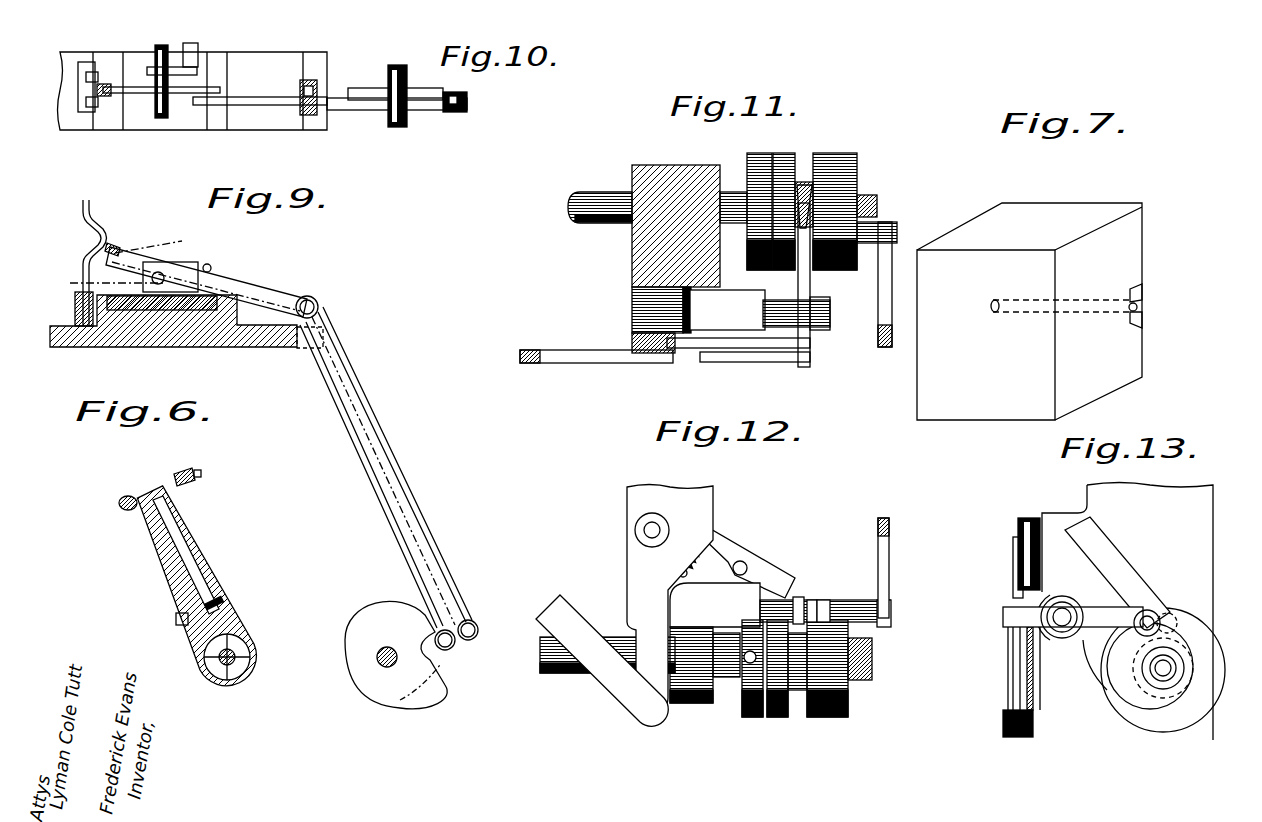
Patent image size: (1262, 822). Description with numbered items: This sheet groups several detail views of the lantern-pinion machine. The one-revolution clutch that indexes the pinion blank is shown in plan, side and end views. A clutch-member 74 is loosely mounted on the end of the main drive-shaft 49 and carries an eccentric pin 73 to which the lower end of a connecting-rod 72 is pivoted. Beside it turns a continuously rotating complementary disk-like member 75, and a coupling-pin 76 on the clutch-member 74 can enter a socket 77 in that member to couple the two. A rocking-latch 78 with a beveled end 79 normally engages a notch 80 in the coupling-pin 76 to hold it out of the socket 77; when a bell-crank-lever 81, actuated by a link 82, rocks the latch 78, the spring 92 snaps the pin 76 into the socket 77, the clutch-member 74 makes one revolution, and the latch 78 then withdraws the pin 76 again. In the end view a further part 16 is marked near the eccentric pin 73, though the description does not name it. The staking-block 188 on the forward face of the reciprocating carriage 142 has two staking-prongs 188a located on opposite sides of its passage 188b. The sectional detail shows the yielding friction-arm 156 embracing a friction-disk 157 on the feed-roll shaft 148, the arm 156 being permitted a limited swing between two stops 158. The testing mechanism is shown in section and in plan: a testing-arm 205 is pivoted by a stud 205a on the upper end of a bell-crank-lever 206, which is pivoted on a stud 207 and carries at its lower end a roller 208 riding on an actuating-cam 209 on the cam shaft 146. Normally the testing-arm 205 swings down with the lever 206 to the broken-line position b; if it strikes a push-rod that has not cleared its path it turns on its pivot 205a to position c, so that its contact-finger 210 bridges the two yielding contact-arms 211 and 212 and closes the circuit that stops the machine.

In FIG. 10, the reciprocating carriage 142 is at (198, 124).
In FIG. 9, the reciprocating carriage 142 is at (150, 308).
In FIG. 10, the cam shaft 146 is at (405, 118).
In FIG. 9, the cam shaft 146 is at (385, 668).
In FIG. 6, the feed-roll shaft 148 is at (233, 680).
In FIG. 6, the yielding friction-arm 156 is at (212, 560).
In FIG. 6, the friction-disk 157 is at (247, 630).
In FIG. 6, the stops 158 is at (183, 473).
In FIG. 10, the testing-arm 205 is at (140, 93).
In FIG. 9, the testing-arm 205 is at (128, 258).
In FIG. 10, the stud 205a is at (208, 105).
In FIG. 9, the stud 205a is at (211, 267).
In FIG. 10, the bell-crank-lever 206 is at (345, 112).
In FIG. 9, the bell-crank-lever 206 is at (342, 383).
In FIG. 9, the stud 207 is at (320, 300).
In FIG. 10, the roller 208 is at (468, 99).
In FIG. 9, the roller 208 is at (457, 653).
In FIG. 10, the actuating-cam 209 is at (362, 94).
In FIG. 9, the actuating-cam 209 is at (450, 697).
In FIG. 10, the contact-finger 210 is at (103, 110).
In FIG. 9, the contact-finger 210 is at (113, 244).
In FIG. 10, the yielding contact-arm 211 is at (88, 84).
In FIG. 9, the yielding contact-arm 211 is at (90, 214).
In FIG. 10, the yielding contact-arm 212 is at (88, 104).
In FIG. 9, the broken-line position b is at (106, 283).
In FIG. 9, the broken-line position c is at (155, 242).
In FIG. 11, the main drive-shaft 49 is at (582, 228).
In FIG. 12, the main drive-shaft 49 is at (557, 668).
In FIG. 13, the main drive-shaft 49 is at (1165, 672).
In FIG. 11, the connecting-rod 72 is at (880, 320).
In FIG. 12, the connecting-rod 72 is at (889, 562).
In FIG. 13, the connecting-rod 72 is at (1110, 568).
In FIG. 11, the eccentric pin 73 is at (897, 230).
In FIG. 12, the eccentric pin 73 is at (892, 613).
In FIG. 13, the eccentric pin 73 is at (1160, 612).
In FIG. 11, the clutch-member 74 is at (853, 182).
In FIG. 12, the clutch-member 74 is at (848, 708).
In FIG. 13, the clutch-member 74 is at (1178, 720).
In FIG. 11, the complementary disk-like member 75 is at (765, 155).
In FIG. 12, the complementary disk-like member 75 is at (750, 718).
In FIG. 11, the coupling-pin 76 is at (823, 170).
In FIG. 11, the socket 77 is at (762, 247).
In FIG. 11, the rocking-latch 78 is at (805, 283).
In FIG. 12, the rocking-latch 78 is at (805, 600).
In FIG. 13, the rocking-latch 78 is at (1100, 628).
In FIG. 11, the beveled end 79 is at (837, 187).
In FIG. 11, the notch 80 is at (857, 200).
In FIG. 13, the notch 80 is at (1160, 632).
In FIG. 11, the bell-crank-lever 81 is at (633, 338).
In FIG. 12, the bell-crank-lever 81 is at (642, 588).
In FIG. 13, the bell-crank-lever 81 is at (1032, 735).
In FIG. 11, the link 82 is at (590, 364).
In FIG. 12, the link 82 is at (612, 687).
In FIG. 13, the link 82 is at (1008, 686).
In FIG. 11, the spring 92 is at (873, 197).
In FIG. 13, the pin 16 is at (1172, 622).
In FIG. 7, the staking-block 188 is at (972, 410).
In FIG. 7, the staking-prongs 188a is at (1128, 322).
In FIG. 7, the passage 188b is at (1128, 310).